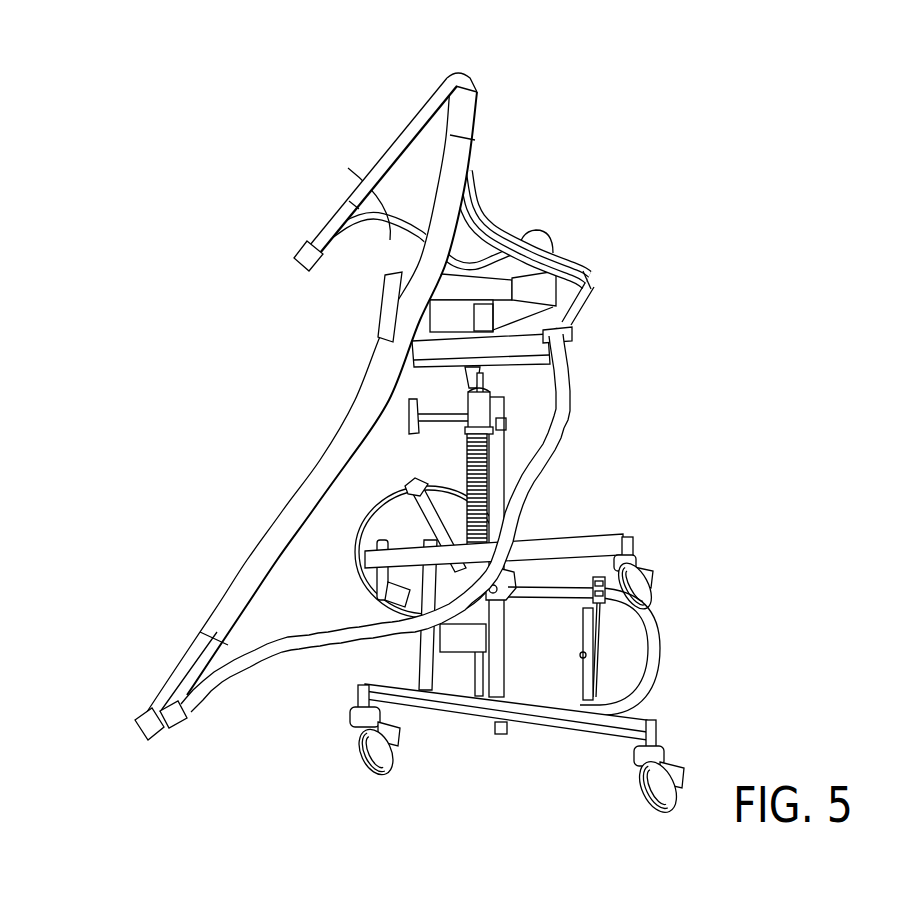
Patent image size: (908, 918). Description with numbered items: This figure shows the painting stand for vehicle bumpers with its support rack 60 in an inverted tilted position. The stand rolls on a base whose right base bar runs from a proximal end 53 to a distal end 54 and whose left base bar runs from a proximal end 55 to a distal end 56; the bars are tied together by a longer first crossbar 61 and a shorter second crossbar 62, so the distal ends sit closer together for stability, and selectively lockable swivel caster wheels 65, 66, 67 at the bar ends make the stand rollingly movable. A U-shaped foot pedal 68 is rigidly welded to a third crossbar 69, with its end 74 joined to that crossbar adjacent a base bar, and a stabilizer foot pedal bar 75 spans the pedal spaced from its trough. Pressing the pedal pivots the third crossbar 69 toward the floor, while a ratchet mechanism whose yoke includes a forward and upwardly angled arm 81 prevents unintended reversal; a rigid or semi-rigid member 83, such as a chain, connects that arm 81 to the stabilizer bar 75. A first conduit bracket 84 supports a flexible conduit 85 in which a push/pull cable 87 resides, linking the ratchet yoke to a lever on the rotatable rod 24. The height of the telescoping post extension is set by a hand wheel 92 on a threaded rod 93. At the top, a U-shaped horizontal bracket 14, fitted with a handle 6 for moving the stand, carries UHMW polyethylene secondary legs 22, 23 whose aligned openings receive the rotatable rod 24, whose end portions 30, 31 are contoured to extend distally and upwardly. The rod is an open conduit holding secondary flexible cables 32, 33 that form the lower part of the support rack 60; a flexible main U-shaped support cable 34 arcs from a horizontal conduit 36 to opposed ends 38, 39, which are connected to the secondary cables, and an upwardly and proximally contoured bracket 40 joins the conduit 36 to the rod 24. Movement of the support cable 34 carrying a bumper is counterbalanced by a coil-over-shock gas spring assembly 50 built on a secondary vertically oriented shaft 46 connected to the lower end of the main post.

The handle 6 is at (392, 300).
The U-shaped horizontal bracket 14 is at (490, 349).
The secondary leg 22 is at (533, 292).
The secondary leg 23 is at (567, 343).
The rotatable rod 24 is at (563, 380).
The end portion of rotatable rod 30 is at (542, 230).
The end portion of rotatable rod 31 is at (557, 435).
The secondary flexible cable 32 is at (393, 204).
The secondary flexible cable 33 is at (312, 650).
The main U-shaped support cable 34 is at (397, 143).
The horizontal open conduit 36 is at (478, 100).
The end of main support cable 38 is at (328, 232).
The end of main support cable 39 is at (168, 687).
The contoured bracket 40 is at (493, 218).
The secondary vertically oriented shaft 46 is at (480, 420).
The coil-over-shock mechanism/gas spring assembly 50 is at (520, 508).
The right base bar proximal end 53 is at (628, 538).
The right base bar distal end 54 is at (358, 545).
The left base bar proximal end 55 is at (652, 722).
The left base bar distal end 56 is at (358, 692).
The support rack 60 is at (406, 103).
The first crossbar 61 is at (481, 668).
The second crossbar 62 is at (423, 668).
The caster wheel 65 is at (365, 600).
The caster wheel 66 is at (645, 790).
The caster wheel 67 is at (365, 765).
The U-shaped foot pedal 68 is at (652, 662).
The third crossbar 69 is at (502, 685).
The end of U-shaped foot pedal 74 is at (514, 700).
The stabilizer foot pedal bar 75 is at (596, 680).
The forward and upwardly angled arm 81 is at (533, 598).
The rigid or semi-rigid member 83 is at (604, 636).
The first conduit bracket 84 is at (408, 485).
The flexible conduit 85 is at (365, 518).
The push/pull cable 87 is at (440, 470).
The hand wheel 92 is at (407, 413).
The threaded rod 93 is at (447, 417).